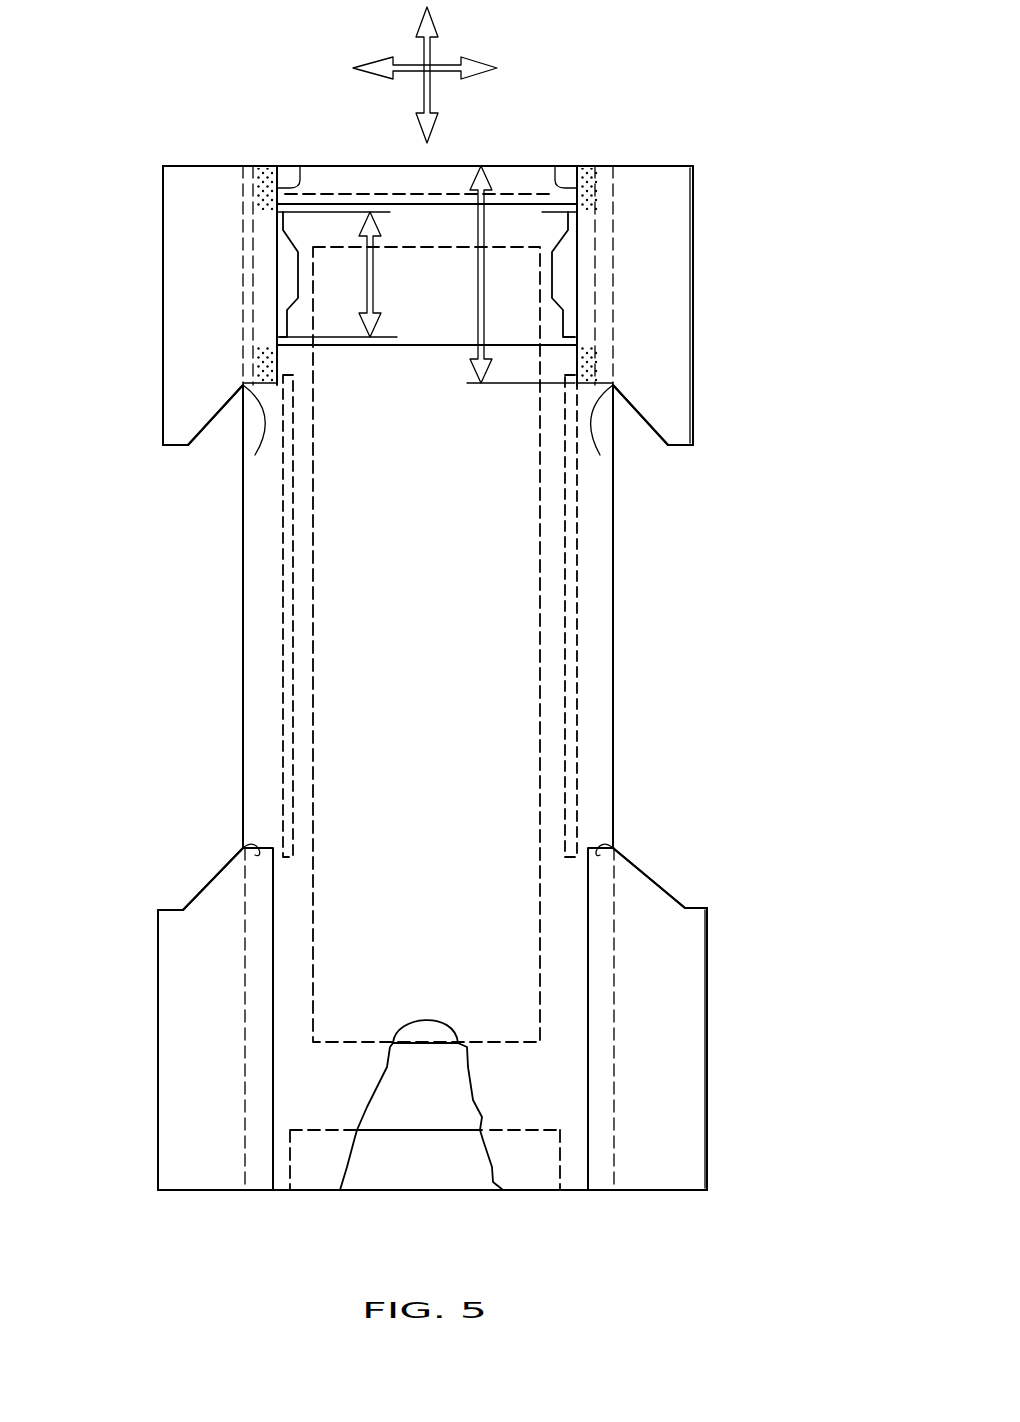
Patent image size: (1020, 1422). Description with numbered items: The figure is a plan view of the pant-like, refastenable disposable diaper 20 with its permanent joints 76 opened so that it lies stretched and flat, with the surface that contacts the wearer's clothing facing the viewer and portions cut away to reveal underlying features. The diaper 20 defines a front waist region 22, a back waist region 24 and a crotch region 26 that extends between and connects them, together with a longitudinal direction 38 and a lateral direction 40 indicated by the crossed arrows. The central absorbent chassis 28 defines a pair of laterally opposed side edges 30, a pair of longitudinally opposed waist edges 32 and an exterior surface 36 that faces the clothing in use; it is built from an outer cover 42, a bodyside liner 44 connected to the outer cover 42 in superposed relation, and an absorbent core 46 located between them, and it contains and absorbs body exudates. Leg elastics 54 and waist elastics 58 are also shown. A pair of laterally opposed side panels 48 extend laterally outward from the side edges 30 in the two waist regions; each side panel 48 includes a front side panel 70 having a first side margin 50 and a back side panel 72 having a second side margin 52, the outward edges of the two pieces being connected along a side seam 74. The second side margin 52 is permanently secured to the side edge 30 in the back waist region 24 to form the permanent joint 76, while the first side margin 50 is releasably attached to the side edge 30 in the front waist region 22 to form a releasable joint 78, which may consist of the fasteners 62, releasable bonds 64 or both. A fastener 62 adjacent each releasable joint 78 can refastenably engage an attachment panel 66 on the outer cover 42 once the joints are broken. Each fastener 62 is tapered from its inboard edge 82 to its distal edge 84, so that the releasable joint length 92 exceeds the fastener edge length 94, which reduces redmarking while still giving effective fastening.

The disposable diaper 20 is at (137, 120).
The front waist region 22 is at (745, 290).
The back waist region 24 is at (750, 958).
The crotch region 26 is at (665, 638).
The absorbent chassis 28 is at (513, 532).
The side edges 30 is at (243, 540).
The waist edges 32 is at (512, 166).
The exterior surface 36 is at (355, 635).
The longitudinal direction 38 is at (437, 32).
The lateral direction 40 is at (442, 75).
The outer cover 42 is at (493, 1190).
The bodyside liner 44 is at (385, 1110).
The absorbent core 46 is at (414, 1046).
The side panels 48 is at (163, 322).
The first side margin 50 is at (290, 168).
The second side margin 52 is at (275, 962).
The leg elastics 54 is at (577, 752).
The waist elastics 58 is at (398, 190).
The fasteners 62 is at (550, 193).
The releasable bonds 64 is at (595, 178).
The attachment panel 66 is at (403, 350).
The front side panel 70 is at (200, 182).
The back side panel 72 is at (182, 912).
The side seam 74 is at (700, 910).
The permanent joint 76 is at (255, 850).
The releasable joint 78 is at (258, 170).
The inboard edge 82 is at (578, 290).
The distal edge 84 is at (283, 290).
The releasable joint length 92 is at (480, 274).
The fastener edge length 94 is at (370, 274).